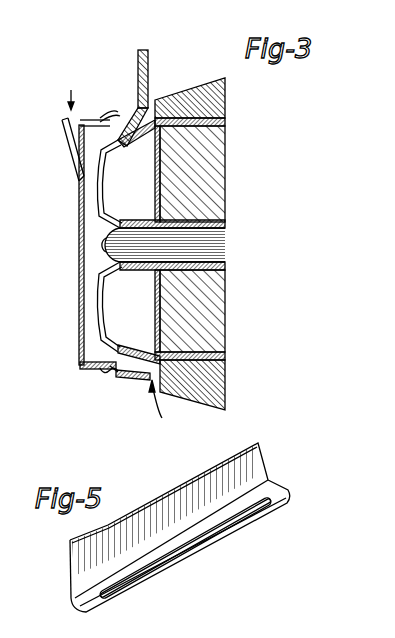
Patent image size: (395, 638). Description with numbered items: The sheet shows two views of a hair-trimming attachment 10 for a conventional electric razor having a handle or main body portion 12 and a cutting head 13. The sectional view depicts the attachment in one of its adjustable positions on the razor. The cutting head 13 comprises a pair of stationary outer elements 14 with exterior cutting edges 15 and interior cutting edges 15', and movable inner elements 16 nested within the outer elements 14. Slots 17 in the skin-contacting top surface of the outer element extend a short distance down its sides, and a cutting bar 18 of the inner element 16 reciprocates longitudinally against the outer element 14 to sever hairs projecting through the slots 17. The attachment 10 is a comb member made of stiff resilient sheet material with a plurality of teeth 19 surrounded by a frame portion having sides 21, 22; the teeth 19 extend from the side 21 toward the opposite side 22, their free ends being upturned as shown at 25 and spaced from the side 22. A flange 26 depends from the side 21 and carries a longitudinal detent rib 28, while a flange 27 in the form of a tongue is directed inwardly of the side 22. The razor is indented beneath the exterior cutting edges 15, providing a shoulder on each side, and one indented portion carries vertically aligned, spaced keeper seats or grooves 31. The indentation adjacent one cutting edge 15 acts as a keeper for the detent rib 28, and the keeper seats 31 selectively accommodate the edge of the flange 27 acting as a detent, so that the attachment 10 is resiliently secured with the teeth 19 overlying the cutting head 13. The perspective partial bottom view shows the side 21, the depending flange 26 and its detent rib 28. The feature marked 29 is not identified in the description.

In FIG. 3, the hair-trimming attachment 10 is at (65, 95).
In FIG. 3, the handle or main body portion 12 is at (193, 100).
In FIG. 3, the cutting head 13 is at (163, 404).
In FIG. 3, the stationary outer elements 14 is at (134, 142).
In FIG. 3, the exterior cutting edges 15 is at (78, 232).
In FIG. 3, the interior cutting edges 15' is at (57, 252).
In FIG. 3, the movable inner elements 16 is at (158, 189).
In FIG. 3, the slots 17 is at (118, 224).
In FIG. 3, the cutting bar 18 is at (95, 190).
In FIG. 3, the teeth 19 is at (79, 183).
In FIG. 3, the side 21 is at (80, 326).
In FIG. 5, the side 21 is at (86, 572).
In FIG. 3, the side 22 is at (149, 60).
In FIG. 3, the upturned free ends of the teeth 25 is at (63, 133).
In FIG. 3, the flange 26 is at (146, 380).
In FIG. 5, the flange 26 is at (84, 608).
In FIG. 3, the flange 27 is at (149, 112).
In FIG. 3, the detent rib 28 is at (122, 374).
In FIG. 5, the detent rib 28 is at (163, 563).
In FIG. 3, the bead 29 is at (101, 370).
In FIG. 3, the keeper seats or grooves 31 is at (127, 113).